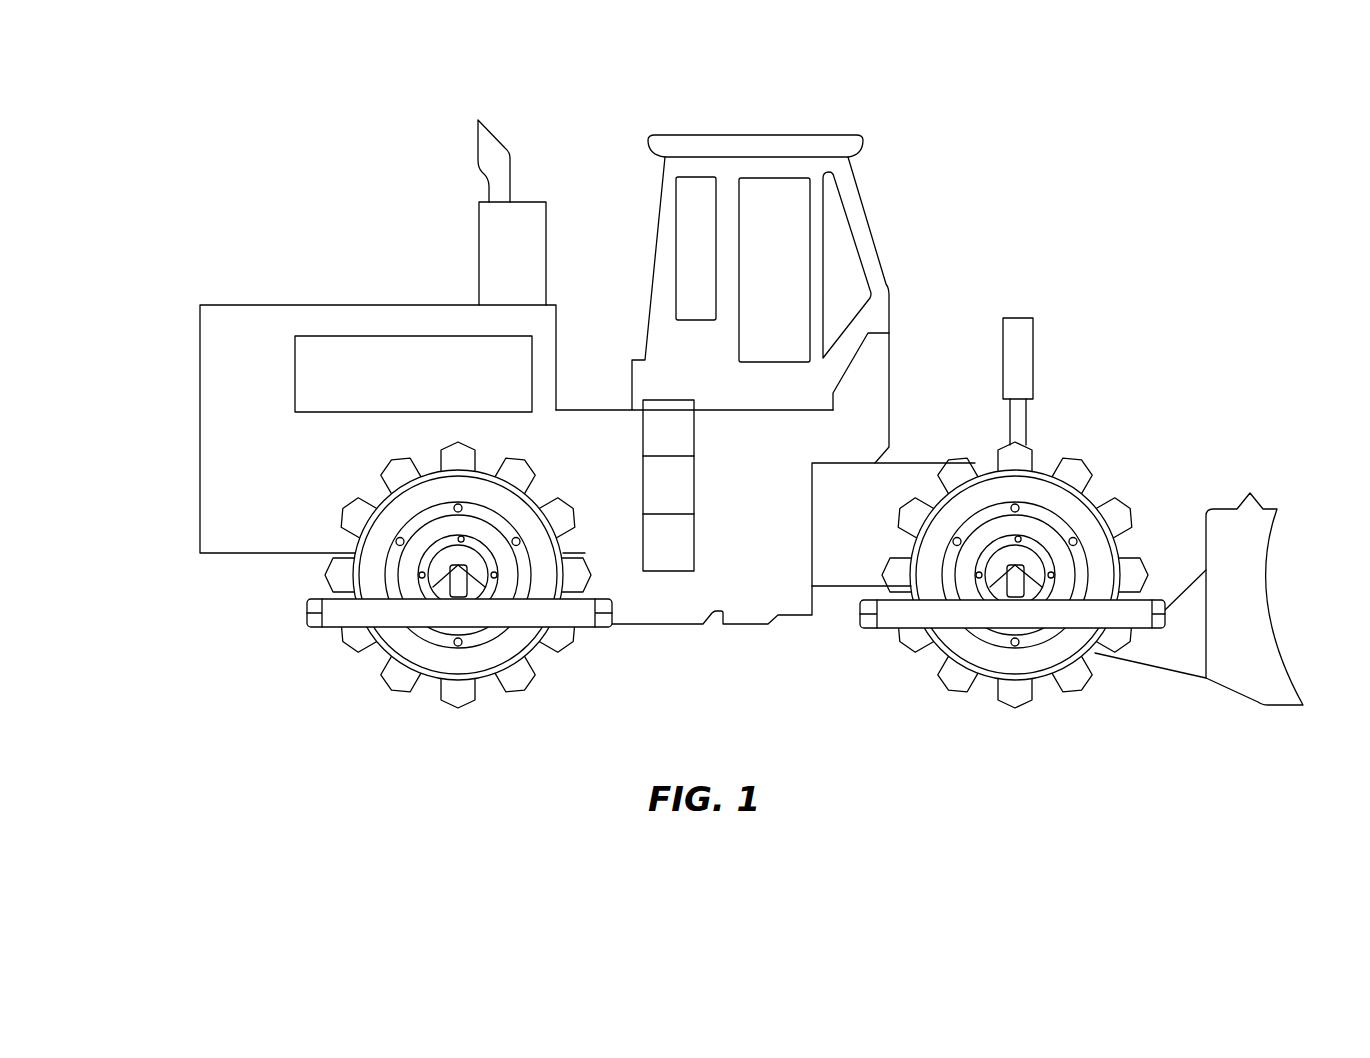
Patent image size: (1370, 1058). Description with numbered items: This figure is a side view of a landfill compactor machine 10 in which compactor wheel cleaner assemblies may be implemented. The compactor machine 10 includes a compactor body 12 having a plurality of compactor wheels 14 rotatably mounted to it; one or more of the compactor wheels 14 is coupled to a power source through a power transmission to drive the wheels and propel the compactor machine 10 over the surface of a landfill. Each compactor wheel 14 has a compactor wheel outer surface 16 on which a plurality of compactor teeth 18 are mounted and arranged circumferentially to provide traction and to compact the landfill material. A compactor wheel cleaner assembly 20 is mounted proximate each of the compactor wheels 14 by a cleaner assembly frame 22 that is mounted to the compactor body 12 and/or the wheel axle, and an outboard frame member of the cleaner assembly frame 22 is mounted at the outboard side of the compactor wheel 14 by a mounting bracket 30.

The landfill compactor machine 10 is at (352, 90).
The compactor body 12 is at (333, 313).
The compactor wheel 14 is at (743, 611).
The compactor wheel outer surface 16 is at (430, 682).
The compactor teeth 18 is at (510, 692).
The compactor wheel cleaner assembly 20 is at (698, 653).
The cleaner assembly frame 22 is at (335, 622).
The mounting bracket 30 is at (470, 584).